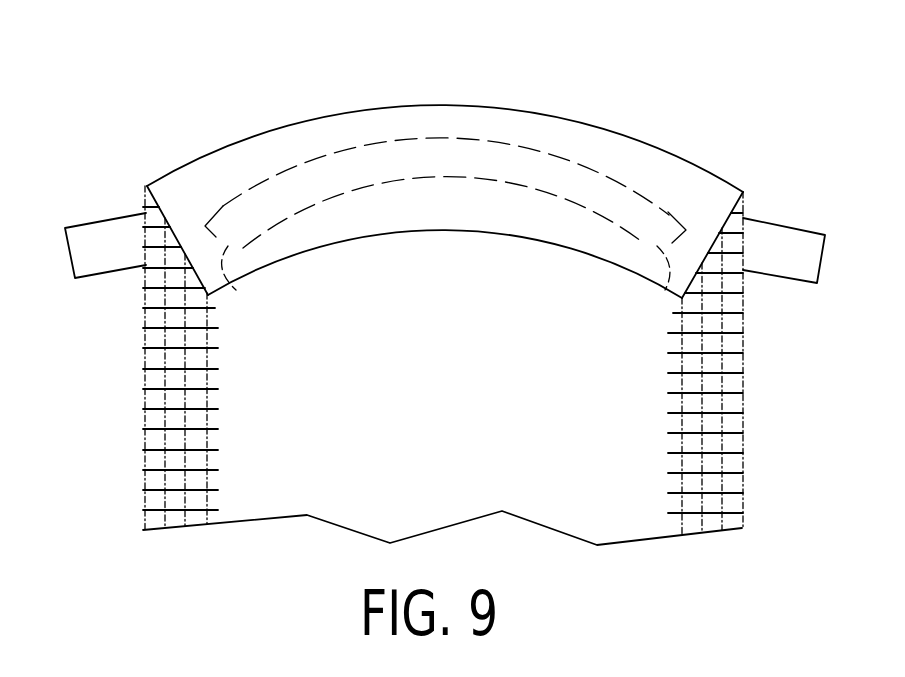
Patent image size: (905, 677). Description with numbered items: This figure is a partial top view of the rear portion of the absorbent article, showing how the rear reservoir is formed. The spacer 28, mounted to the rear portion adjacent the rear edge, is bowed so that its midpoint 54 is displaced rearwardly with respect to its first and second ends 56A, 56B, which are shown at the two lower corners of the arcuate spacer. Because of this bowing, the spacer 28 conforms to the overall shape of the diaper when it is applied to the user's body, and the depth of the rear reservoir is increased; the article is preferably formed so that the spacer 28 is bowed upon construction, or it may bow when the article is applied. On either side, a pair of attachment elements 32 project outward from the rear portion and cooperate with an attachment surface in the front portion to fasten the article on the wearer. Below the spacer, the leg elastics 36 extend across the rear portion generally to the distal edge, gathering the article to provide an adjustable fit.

The spacer 28 is at (593, 192).
The attachment elements 32 is at (100, 258).
The leg elastics 36 is at (170, 420).
The midpoint 54 is at (470, 140).
The first end 56A is at (245, 295).
The second end 56B is at (661, 291).